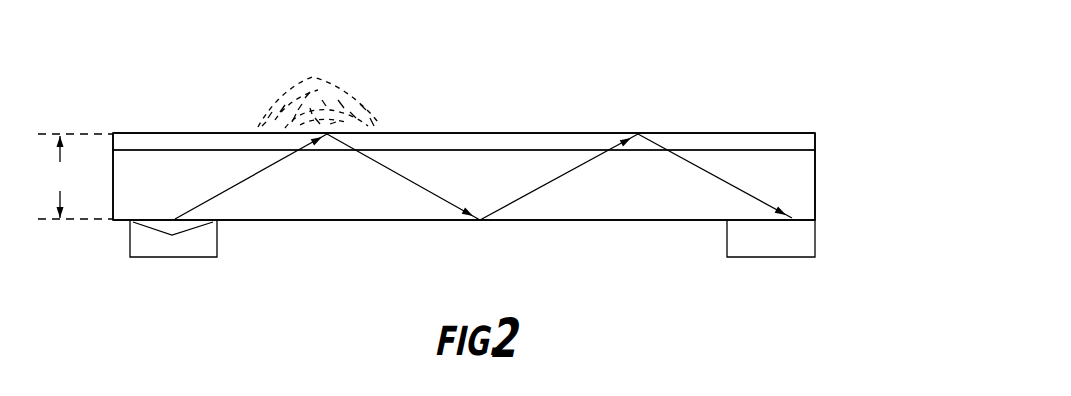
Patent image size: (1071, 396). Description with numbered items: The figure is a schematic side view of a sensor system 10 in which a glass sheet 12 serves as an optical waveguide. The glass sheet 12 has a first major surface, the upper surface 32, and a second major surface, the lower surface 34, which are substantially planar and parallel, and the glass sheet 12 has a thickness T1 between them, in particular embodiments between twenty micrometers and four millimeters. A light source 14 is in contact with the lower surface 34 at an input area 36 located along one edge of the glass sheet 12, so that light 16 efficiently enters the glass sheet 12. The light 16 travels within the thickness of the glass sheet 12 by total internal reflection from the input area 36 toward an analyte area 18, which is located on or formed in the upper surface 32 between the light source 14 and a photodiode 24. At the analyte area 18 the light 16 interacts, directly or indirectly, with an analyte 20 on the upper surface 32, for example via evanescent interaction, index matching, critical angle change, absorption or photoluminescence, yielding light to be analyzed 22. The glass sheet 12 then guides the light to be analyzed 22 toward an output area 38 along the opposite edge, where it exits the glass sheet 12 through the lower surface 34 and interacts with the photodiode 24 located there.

The sensor system 10 is at (890, 162).
The glass sheet 12 is at (748, 160).
The light source 14 is at (130, 250).
The light 16 is at (258, 172).
The analyte area 18 is at (494, 128).
The analyte 20 is at (318, 93).
The light to be analyzed 22 is at (537, 192).
The photodiode 24 is at (810, 240).
The upper surface 32 is at (176, 128).
The lower surface 34 is at (445, 234).
The input area 36 is at (130, 203).
The output area 38 is at (828, 210).
The thickness T1 is at (75, 176).